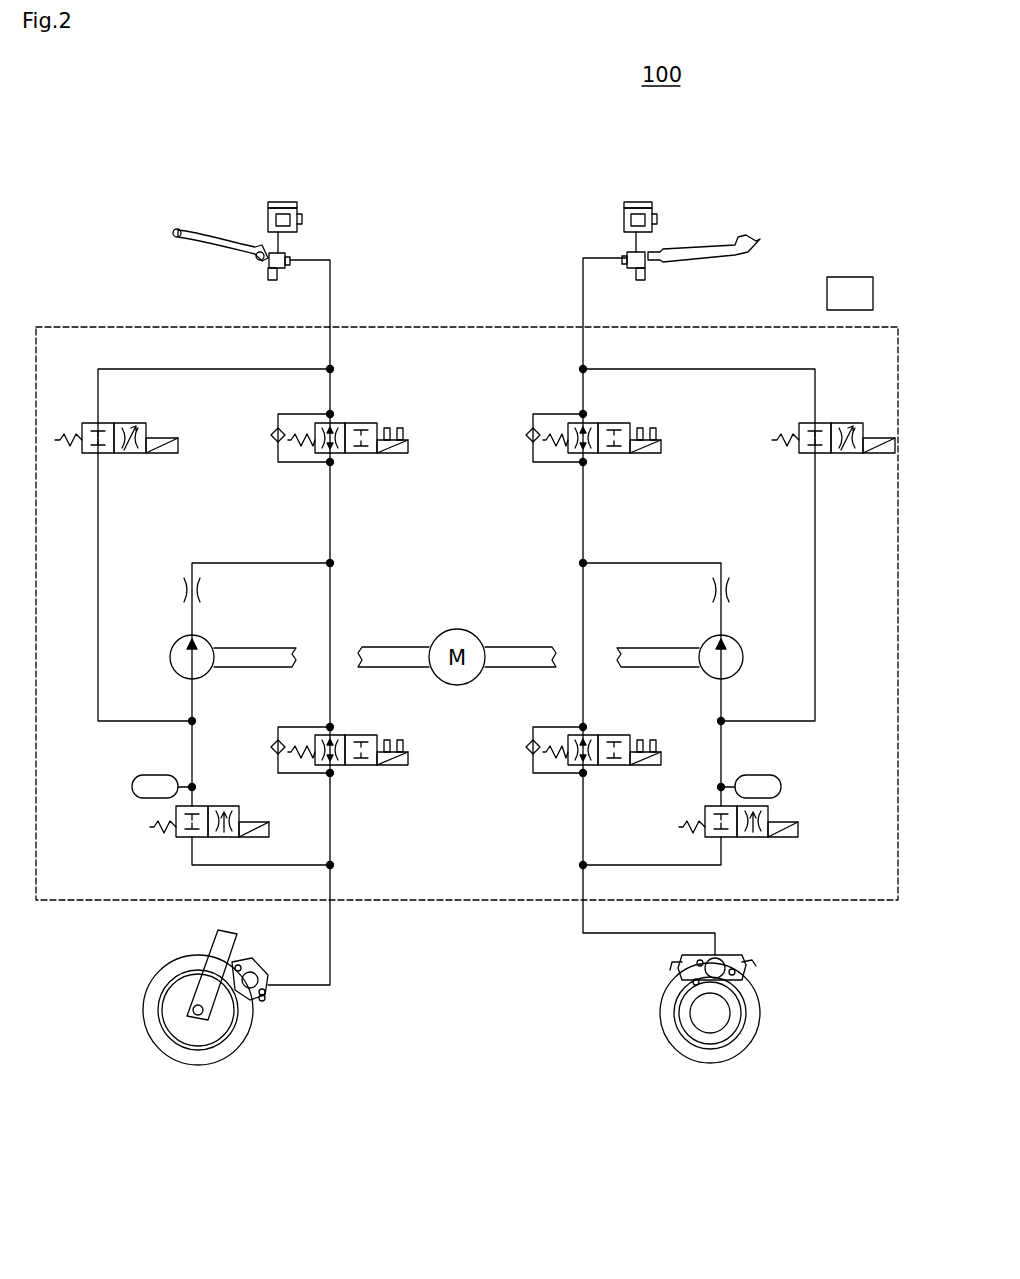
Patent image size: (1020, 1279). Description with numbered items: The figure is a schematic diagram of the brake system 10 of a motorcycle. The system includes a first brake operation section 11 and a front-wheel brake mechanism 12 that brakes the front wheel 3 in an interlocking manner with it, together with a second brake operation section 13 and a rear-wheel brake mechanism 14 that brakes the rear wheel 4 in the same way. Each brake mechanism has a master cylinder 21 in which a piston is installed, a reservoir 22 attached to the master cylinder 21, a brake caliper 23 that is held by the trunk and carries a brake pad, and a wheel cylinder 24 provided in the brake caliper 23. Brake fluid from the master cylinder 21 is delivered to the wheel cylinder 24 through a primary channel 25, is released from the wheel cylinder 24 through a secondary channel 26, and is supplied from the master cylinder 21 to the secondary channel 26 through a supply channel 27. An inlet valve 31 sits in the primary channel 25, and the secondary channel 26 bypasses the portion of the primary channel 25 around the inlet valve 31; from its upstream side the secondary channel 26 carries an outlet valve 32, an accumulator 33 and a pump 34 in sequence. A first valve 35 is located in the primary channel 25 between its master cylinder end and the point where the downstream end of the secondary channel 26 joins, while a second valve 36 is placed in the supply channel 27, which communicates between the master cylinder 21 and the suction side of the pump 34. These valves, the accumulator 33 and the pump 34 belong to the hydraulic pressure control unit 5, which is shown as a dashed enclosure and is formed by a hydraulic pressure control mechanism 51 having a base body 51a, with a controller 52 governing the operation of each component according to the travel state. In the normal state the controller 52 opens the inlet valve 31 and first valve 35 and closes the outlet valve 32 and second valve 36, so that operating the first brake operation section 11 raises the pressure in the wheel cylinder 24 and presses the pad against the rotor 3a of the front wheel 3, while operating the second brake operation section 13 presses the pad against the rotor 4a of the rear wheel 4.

The front wheel 3 is at (205, 1081).
The rotor 3a is at (252, 1046).
The rear wheel 4 is at (717, 1081).
The rotor 4a is at (668, 1040).
The hydraulic pressure control unit 5 is at (826, 166).
The brake system 10 is at (134, 212).
The first brake operation section 11 is at (203, 235).
The front-wheel brake mechanism 12 is at (370, 146).
The second brake operation section 13 is at (728, 242).
The rear-wheel brake mechanism 14 is at (551, 140).
The master cylinder 21 is at (283, 280).
The reservoir 22 is at (278, 200).
The brake caliper 23 is at (255, 968).
The wheel cylinder 24 is at (265, 995).
The primary channel 25 is at (325, 495).
The secondary channel 26 is at (262, 563).
The supply channel 27 is at (235, 372).
The inlet valve 31 is at (368, 766).
The outlet valve 32 is at (226, 806).
The accumulator 33 is at (157, 775).
The pump 34 is at (168, 657).
The first valve 35 is at (395, 455).
The second valve 36 is at (155, 455).
The hydraulic pressure control mechanism 51 is at (798, 246).
The base body 51a is at (790, 327).
The controller 52 is at (858, 262).